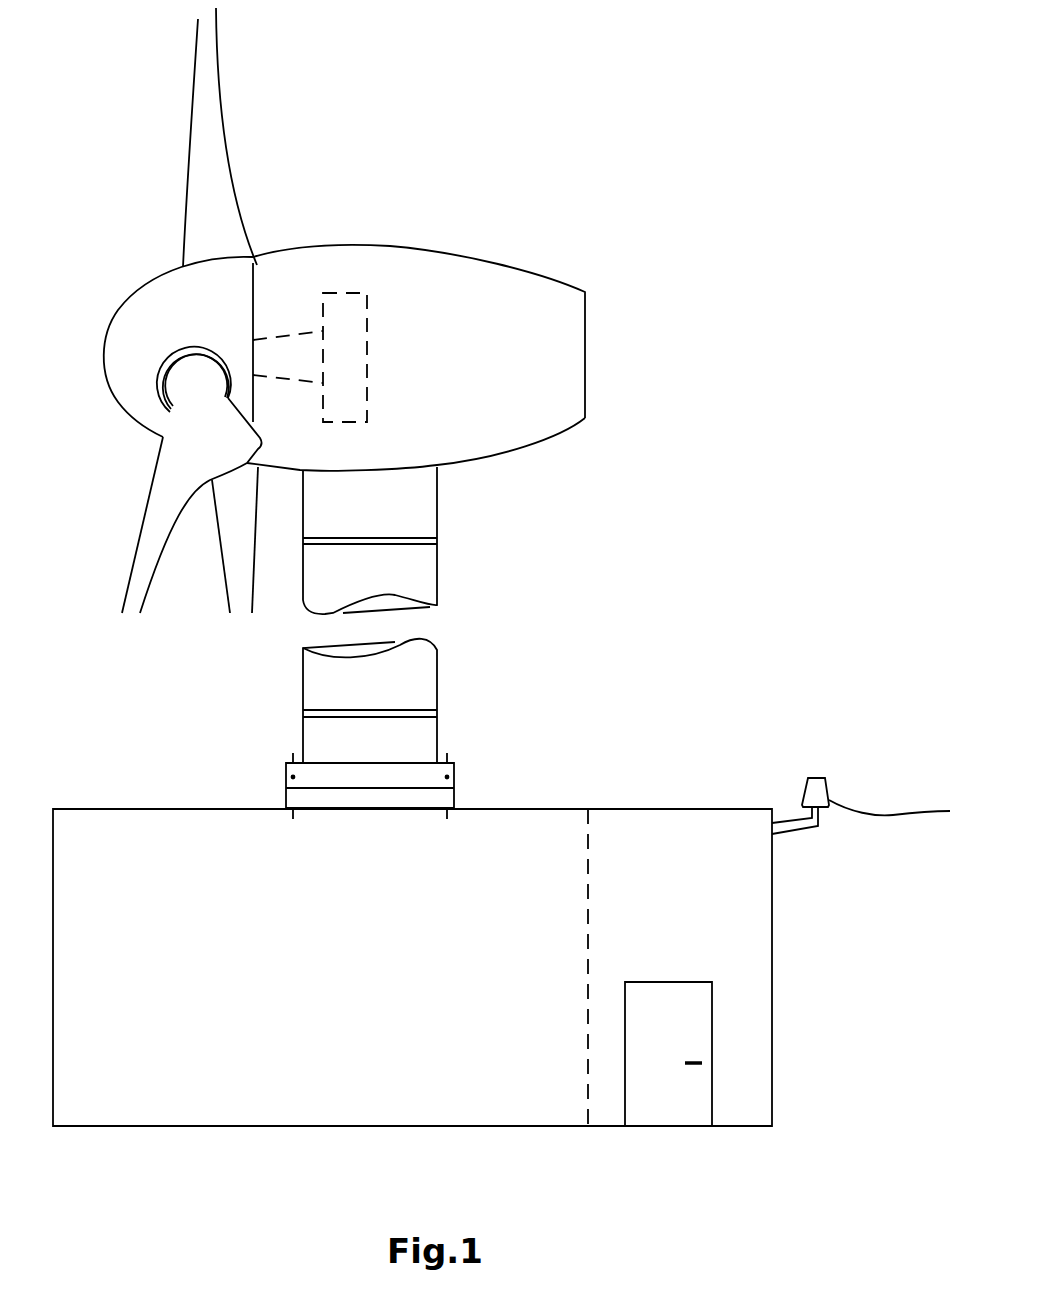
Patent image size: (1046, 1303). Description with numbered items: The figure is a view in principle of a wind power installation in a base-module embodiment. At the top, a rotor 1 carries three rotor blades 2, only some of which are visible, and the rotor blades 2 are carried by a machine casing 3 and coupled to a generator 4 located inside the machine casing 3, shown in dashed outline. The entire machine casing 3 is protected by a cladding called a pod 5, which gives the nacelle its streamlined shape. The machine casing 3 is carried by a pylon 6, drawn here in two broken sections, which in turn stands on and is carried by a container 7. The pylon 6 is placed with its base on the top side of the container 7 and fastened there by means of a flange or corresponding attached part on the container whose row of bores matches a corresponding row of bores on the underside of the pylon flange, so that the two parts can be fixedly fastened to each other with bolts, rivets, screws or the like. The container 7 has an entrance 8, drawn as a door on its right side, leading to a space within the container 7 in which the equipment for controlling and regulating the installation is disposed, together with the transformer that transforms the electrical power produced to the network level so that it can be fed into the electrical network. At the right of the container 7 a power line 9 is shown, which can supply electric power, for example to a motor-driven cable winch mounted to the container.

The rotor 1 is at (377, 310).
The rotor blades 2 is at (212, 125).
The machine casing 3 is at (460, 318).
The generator 4 is at (348, 308).
The pod 5 is at (532, 445).
The pylon 6 is at (420, 570).
The container 7 is at (650, 818).
The entrance 8 is at (670, 1117).
The power line 9 is at (878, 812).